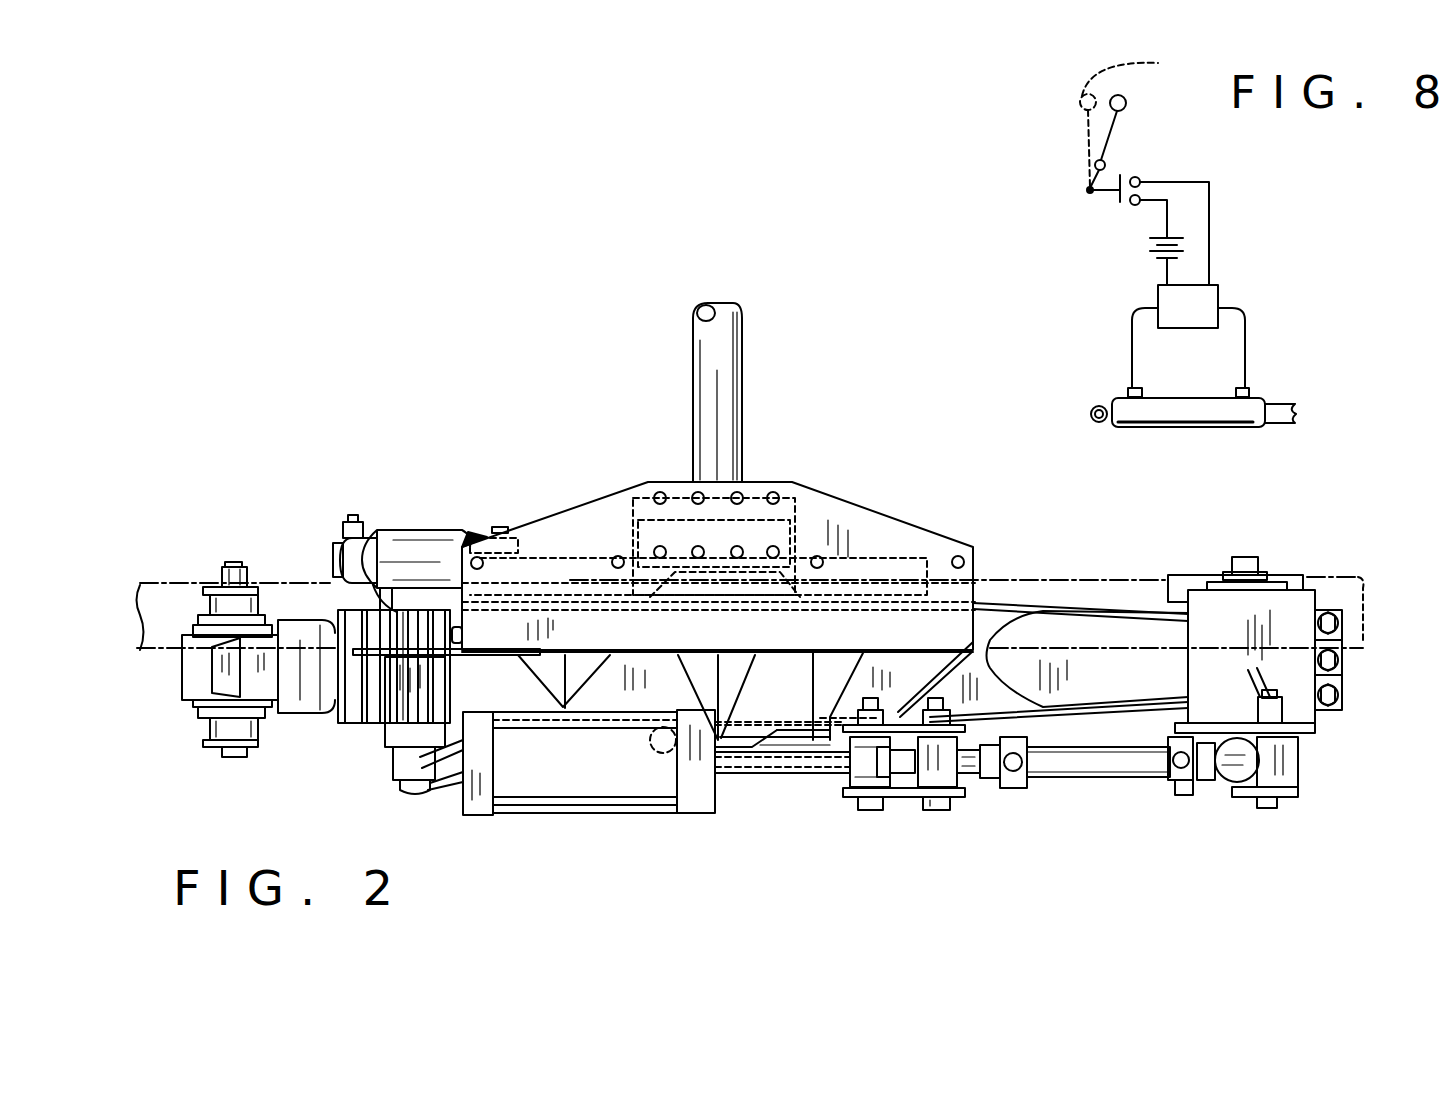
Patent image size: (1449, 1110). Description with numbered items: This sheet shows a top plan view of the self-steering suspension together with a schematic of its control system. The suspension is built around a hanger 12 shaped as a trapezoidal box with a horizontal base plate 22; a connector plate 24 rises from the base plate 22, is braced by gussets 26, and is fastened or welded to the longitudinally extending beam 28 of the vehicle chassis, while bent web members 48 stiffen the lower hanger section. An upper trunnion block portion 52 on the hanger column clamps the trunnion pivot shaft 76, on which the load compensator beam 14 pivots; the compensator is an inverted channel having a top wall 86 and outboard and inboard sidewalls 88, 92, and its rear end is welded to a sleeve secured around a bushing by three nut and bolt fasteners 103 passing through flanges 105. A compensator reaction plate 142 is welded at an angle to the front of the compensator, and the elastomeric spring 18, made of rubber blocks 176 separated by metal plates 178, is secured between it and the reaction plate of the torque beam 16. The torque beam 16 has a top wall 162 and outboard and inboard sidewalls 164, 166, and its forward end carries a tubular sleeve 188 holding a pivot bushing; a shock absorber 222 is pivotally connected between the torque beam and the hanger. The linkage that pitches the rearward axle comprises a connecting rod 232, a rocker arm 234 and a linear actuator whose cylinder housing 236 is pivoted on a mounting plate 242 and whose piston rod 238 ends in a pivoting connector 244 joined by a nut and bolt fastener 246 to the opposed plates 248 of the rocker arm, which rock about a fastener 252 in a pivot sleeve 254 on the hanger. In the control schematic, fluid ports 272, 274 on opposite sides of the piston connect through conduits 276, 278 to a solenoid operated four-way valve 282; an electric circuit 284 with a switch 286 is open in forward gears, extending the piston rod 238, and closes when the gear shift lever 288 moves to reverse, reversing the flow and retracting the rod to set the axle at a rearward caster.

In FIG. 2, the hanger 12 is at (610, 690).
In FIG. 2, the load compensator beam 14 is at (1067, 633).
In FIG. 2, the torque beam 16 is at (303, 718).
In FIG. 2, the elastomeric spring 18 is at (358, 723).
In FIG. 2, the base plate 22 is at (872, 532).
In FIG. 2, the connector plate 24 is at (643, 657).
In FIG. 2, the gussets 26 is at (557, 675).
In FIG. 2, the longitudinally extending beam 28 is at (997, 592).
In FIG. 2, the web members 48 is at (773, 737).
In FIG. 2, the upper portion of trunnion block 52 is at (783, 753).
In FIG. 2, the trunnion pivot shaft 76 is at (742, 390).
In FIG. 2, the top wall 86 is at (1087, 683).
In FIG. 2, the outboard sidewall 88 is at (1137, 700).
In FIG. 2, the inboard sidewall 92 is at (1032, 603).
In FIG. 2, the nut and bolt fasteners 103 is at (1327, 710).
In FIG. 2, the flanges 105 is at (1342, 665).
In FIG. 2, the compensator reaction plate 142 is at (437, 777).
In FIG. 2, the top wall 162 is at (300, 678).
In FIG. 2, the outboard sidewall 164 is at (322, 717).
In FIG. 2, the inboard sidewall 166 is at (308, 617).
In FIG. 2, the rubber blocks 176 is at (448, 543).
In FIG. 2, the metal plates 178 is at (407, 620).
In FIG. 2, the tubular sleeve 188 is at (197, 677).
In FIG. 2, the shock absorber 222 is at (448, 547).
In FIG. 2, the connecting rod 232 is at (1070, 777).
In FIG. 2, the rocker arm 234 is at (907, 803).
In FIG. 2, the cylinder housing 236 is at (653, 778).
In FIG. 8, the cylinder housing 236 is at (1217, 415).
In FIG. 2, the piston rod 238 is at (747, 773).
In FIG. 8, the piston rod 238 is at (1287, 420).
In FIG. 2, the mounting plate 242 is at (463, 667).
In FIG. 2, the pivoting connector 244 is at (945, 777).
In FIG. 2, the nut and bolt fastener 246 is at (942, 807).
In FIG. 2, the opposed plates 248 is at (915, 728).
In FIG. 2, the nut and bolt fastener 252 is at (873, 807).
In FIG. 2, the pivot sleeve 254 is at (847, 785).
In FIG. 8, the fluid port 272 is at (1143, 388).
In FIG. 8, the fluid port 274 is at (1248, 390).
In FIG. 8, the conduit 276 is at (1133, 318).
In FIG. 8, the conduit 278 is at (1247, 343).
In FIG. 8, the solenoid operated four-way valve 282 is at (1208, 297).
In FIG. 8, the electric circuit 284 is at (1210, 213).
In FIG. 8, the switch 286 is at (1128, 170).
In FIG. 8, the gear shift lever 288 is at (1120, 125).